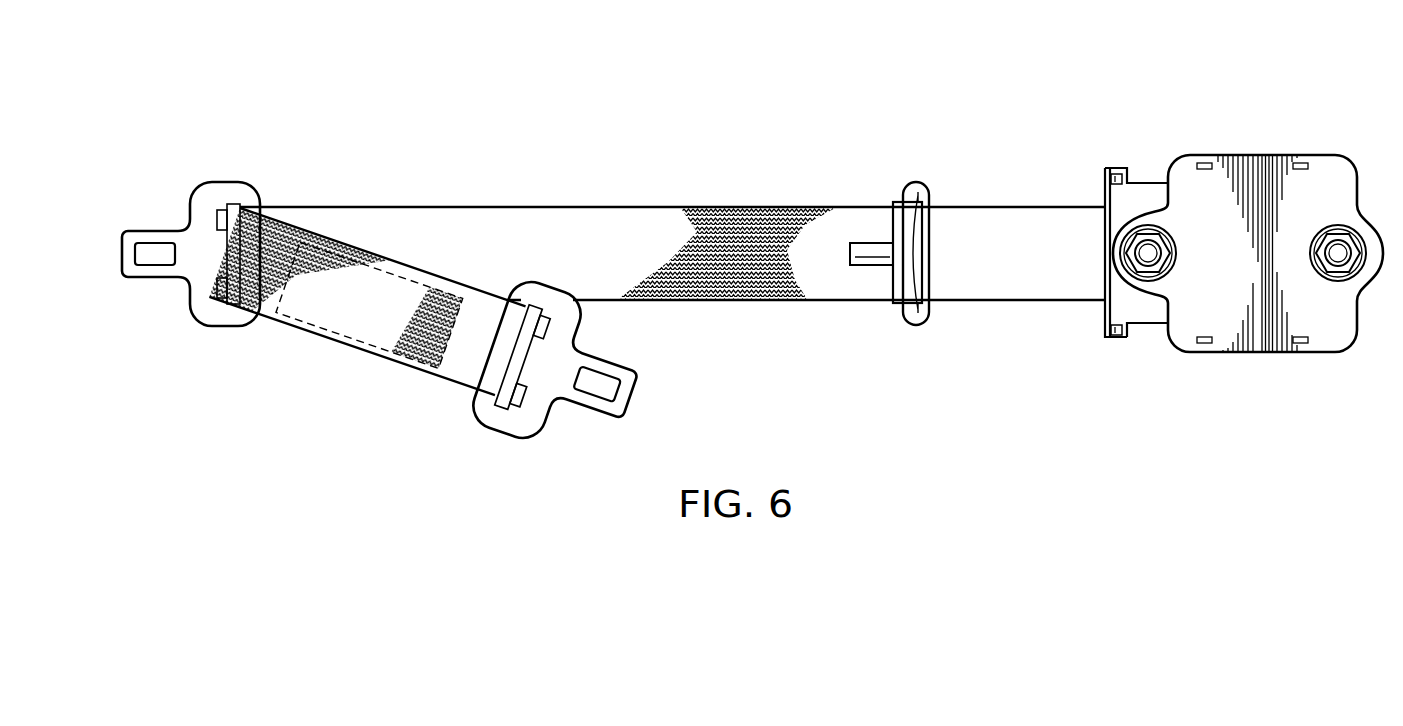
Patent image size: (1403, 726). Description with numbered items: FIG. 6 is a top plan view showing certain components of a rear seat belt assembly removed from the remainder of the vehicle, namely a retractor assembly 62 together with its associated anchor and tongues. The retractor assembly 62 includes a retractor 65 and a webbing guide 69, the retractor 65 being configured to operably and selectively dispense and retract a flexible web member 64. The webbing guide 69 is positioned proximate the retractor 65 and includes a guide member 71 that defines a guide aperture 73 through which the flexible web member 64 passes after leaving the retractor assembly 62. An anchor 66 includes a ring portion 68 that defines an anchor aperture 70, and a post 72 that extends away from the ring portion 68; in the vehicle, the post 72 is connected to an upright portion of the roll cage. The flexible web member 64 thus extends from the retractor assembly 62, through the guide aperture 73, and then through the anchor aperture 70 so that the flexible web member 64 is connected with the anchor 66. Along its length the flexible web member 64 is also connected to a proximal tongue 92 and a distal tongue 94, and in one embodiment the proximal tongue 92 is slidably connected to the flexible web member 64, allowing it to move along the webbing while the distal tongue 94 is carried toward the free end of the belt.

The retractor assembly 62 is at (1213, 226).
The flexible web member 64 is at (659, 183).
The retractor 65 is at (1204, 131).
The anchor 66 is at (915, 245).
The ring portion 68 is at (915, 327).
The webbing guide 69 is at (1135, 164).
The anchor aperture 70 is at (930, 308).
The guide member 71 is at (1104, 314).
The post 72 is at (866, 268).
The guide aperture 73 is at (1116, 338).
The proximal tongue 92 is at (209, 157).
The distal tongue 94 is at (512, 458).